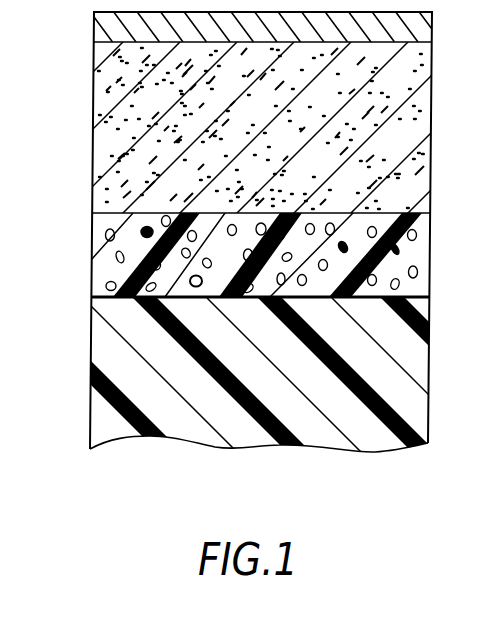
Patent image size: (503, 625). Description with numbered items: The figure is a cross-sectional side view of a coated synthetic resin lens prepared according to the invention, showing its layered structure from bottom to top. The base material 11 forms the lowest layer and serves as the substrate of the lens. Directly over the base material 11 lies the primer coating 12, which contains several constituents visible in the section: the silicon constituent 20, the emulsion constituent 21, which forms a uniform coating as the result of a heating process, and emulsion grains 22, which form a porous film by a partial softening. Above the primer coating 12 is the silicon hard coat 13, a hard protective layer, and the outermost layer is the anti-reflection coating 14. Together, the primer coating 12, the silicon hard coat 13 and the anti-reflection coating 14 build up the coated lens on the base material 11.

The base material 11 is at (422, 369).
The primer coating 12 is at (428, 262).
The silicon hard coat 13 is at (429, 137).
The anti-reflection coating 14 is at (432, 27).
The silicon constituent 20 is at (142, 231).
The emulsion constituent 21 is at (190, 281).
The emulsion grains 22 is at (105, 234).